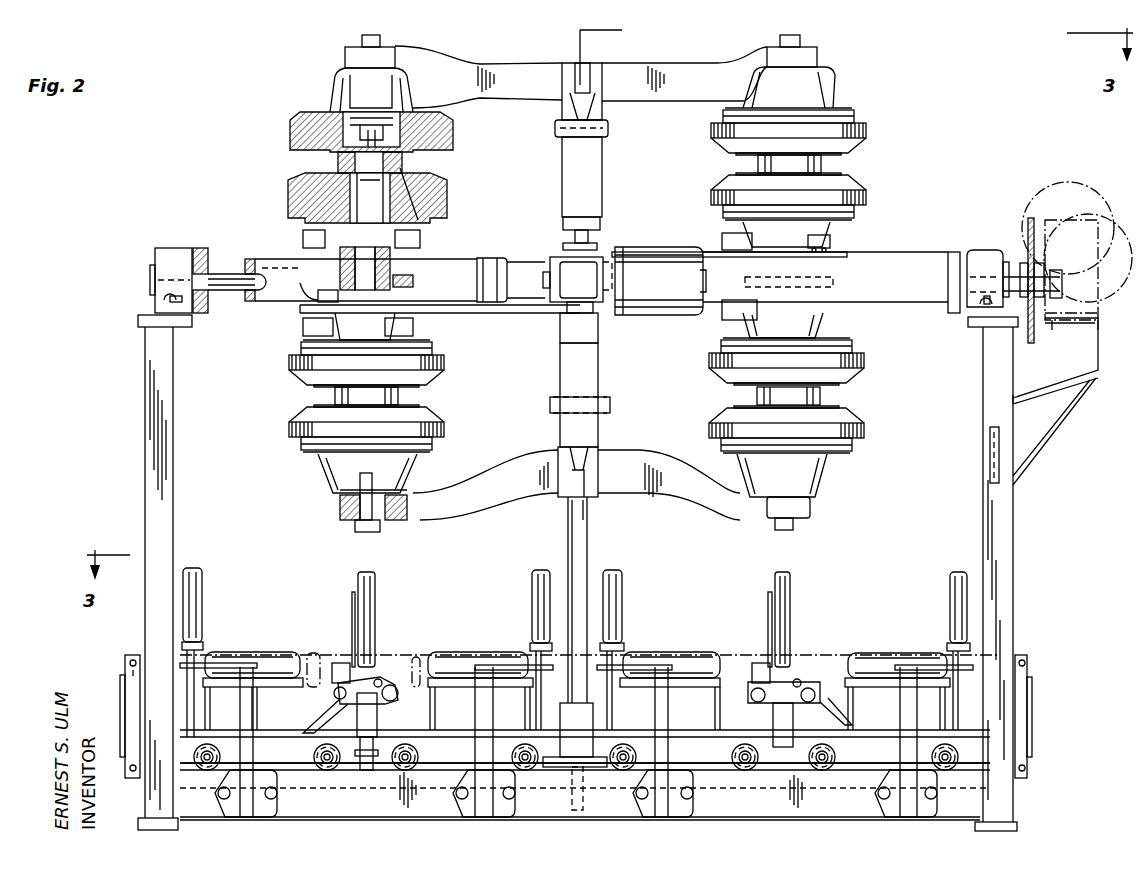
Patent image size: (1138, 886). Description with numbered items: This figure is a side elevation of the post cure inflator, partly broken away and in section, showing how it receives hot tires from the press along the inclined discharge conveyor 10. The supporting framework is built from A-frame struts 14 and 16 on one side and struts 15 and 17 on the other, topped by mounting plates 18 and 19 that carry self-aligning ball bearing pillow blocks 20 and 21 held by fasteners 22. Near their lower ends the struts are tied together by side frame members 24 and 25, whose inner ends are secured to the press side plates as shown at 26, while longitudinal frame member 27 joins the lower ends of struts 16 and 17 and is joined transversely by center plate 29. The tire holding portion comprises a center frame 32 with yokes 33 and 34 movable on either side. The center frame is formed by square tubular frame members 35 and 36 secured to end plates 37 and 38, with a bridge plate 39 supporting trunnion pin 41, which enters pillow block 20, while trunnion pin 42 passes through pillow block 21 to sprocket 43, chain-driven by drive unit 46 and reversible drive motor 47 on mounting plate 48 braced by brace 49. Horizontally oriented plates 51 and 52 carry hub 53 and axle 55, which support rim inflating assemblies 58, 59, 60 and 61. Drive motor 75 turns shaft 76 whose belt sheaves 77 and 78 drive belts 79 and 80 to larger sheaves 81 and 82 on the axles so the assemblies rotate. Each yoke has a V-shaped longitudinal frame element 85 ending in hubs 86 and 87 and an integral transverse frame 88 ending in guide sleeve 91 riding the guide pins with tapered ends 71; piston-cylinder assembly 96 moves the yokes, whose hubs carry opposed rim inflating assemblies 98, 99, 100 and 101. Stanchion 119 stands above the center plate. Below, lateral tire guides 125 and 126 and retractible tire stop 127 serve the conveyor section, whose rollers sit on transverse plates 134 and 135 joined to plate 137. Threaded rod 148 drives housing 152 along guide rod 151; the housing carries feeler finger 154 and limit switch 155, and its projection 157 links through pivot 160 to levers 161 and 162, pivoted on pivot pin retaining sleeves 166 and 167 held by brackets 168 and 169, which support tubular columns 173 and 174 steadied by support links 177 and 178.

The inclined discharge conveyor 10 is at (416, 655).
The A-frame strut 14 is at (125, 578).
The A-frame strut 16 is at (145, 462).
The A-frame strut 15 is at (1033, 579).
The A-frame strut 17 is at (1013, 518).
The mounting plate 18 is at (138, 321).
The mounting plate 19 is at (980, 328).
The self-aligning ball bearing pillow block 20 is at (168, 248).
The self-aligning ball bearing pillow block 21 is at (985, 250).
The fasteners 22 is at (165, 297).
The frame member 24 is at (125, 700).
The frame member 25 is at (1032, 722).
The fastening location 26 is at (132, 772).
The longitudinal frame member 27 is at (765, 800).
The center plate 29 is at (575, 812).
The center frame 32 is at (878, 246).
The yoke 33 is at (640, 102).
The yoke 34 is at (636, 462).
The square tubular frame member 35 is at (452, 259).
The square tubular frame member 36 is at (497, 258).
The end plate 37 is at (199, 314).
The end plate 38 is at (955, 252).
The bridge plate 39 is at (250, 301).
The trunnion pin 41 is at (222, 274).
The trunnion pin 42 is at (1020, 272).
The sprocket 43 is at (1034, 336).
The drive unit 46 is at (1087, 250).
The reversible drive motor 47 is at (1040, 200).
The mounting plate 48 is at (1070, 396).
The brace 49 is at (1040, 442).
The horizontally oriented plate 51 is at (414, 280).
The horizontally oriented plate 52 is at (834, 283).
The hub 53 is at (392, 258).
The axle 55 is at (403, 176).
The rim inflating assembly 58 is at (458, 196).
The rim inflating assembly 59 is at (458, 380).
The rim inflating assembly 60 is at (870, 178).
The rim inflating assembly 61 is at (876, 378).
The tapered end 71 is at (558, 455).
The drive motor 75 is at (650, 316).
The shaft 76 is at (590, 236).
The belt sheave 77 is at (553, 315).
The belt sheave 78 is at (600, 251).
The drive belt 79 is at (440, 313).
The drive belt 80 is at (714, 252).
The sheave 81 is at (308, 287).
The sheave 82 is at (831, 241).
The longitudinal frame element 85 is at (663, 498).
The hub 86 is at (340, 510).
The hub 87 is at (812, 512).
The transverse frame 88 is at (600, 480).
The guide sleeve 91 is at (600, 413).
The piston-cylinder assembly 96 is at (600, 387).
The rim inflating assembly 98 is at (458, 126).
The rim inflating assembly 99 is at (460, 430).
The rim inflating assembly 100 is at (870, 130).
The rim inflating assembly 101 is at (876, 427).
The stanchion 119 is at (590, 762).
The lateral tire guide 125 is at (204, 584).
The lateral tire guide 126 is at (532, 600).
The retractible tire stop 127 is at (376, 585).
The transverse plate 134 is at (200, 742).
The transverse plate 135 is at (270, 700).
The plate 137 is at (296, 771).
The threaded rod 148 is at (382, 680).
The guide rod 151 is at (390, 712).
The housing 152 is at (398, 694).
The feeler finger 154 is at (352, 612).
The limit switch 155 is at (345, 663).
The projection 157 is at (316, 718).
The pivot connection 160 is at (366, 760).
The lever 161 is at (352, 775).
The lever 162 is at (412, 766).
The pivot pin retaining sleeve 166 is at (262, 715).
The pivot pin retaining sleeve 167 is at (478, 714).
The bracket 168 is at (245, 802).
The bracket 169 is at (485, 806).
The tubular column 173 is at (185, 680).
The tubular column 174 is at (545, 703).
The support link 177 is at (228, 652).
The support link 178 is at (520, 665).